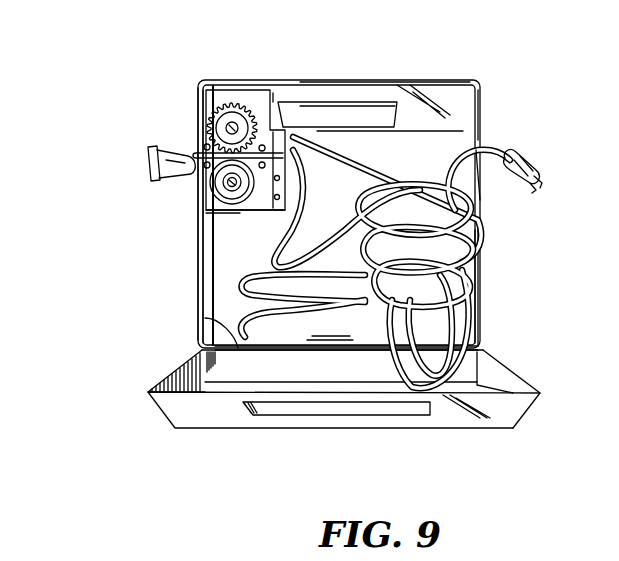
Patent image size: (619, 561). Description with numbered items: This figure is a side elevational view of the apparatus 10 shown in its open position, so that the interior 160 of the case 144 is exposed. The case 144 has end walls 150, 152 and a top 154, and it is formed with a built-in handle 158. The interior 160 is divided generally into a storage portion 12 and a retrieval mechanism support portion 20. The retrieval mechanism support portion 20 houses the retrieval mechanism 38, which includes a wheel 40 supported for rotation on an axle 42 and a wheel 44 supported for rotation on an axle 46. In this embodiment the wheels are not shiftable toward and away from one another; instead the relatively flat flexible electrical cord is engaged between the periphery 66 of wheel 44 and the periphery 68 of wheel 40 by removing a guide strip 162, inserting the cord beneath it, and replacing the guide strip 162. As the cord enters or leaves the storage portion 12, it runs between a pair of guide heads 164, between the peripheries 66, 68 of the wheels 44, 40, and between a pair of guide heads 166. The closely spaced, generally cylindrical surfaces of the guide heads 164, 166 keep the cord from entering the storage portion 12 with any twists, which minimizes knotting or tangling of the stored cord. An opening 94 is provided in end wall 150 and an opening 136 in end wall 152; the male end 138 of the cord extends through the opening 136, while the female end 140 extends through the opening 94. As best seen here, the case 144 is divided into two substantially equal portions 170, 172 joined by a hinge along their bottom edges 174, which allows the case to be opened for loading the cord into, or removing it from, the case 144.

The apparatus 10 is at (440, 62).
The storage portion 12 is at (256, 267).
The retrieval mechanism support portion 20 is at (268, 102).
The retrieval mechanism 38 is at (186, 116).
The wheel 40 is at (233, 124).
The axle 42 is at (229, 127).
The wheel 44 is at (250, 188).
The axle 46 is at (236, 186).
The periphery 66 is at (228, 213).
The periphery 68 is at (247, 106).
The opening 94 is at (197, 153).
The opening 136 is at (500, 147).
The male end 138 is at (534, 172).
The female end 140 is at (148, 163).
The case 144 is at (186, 300).
The end wall 150 is at (197, 237).
The end wall 152 is at (481, 250).
The top 154 is at (443, 81).
The handle 158 is at (355, 104).
The interior 160 is at (442, 152).
The guide strip 162 is at (293, 128).
The guide heads 164 is at (302, 138).
The guide heads 166 is at (203, 147).
The portion 170 is at (486, 88).
The portion 172 is at (514, 368).
The bottom edges 174 is at (235, 350).